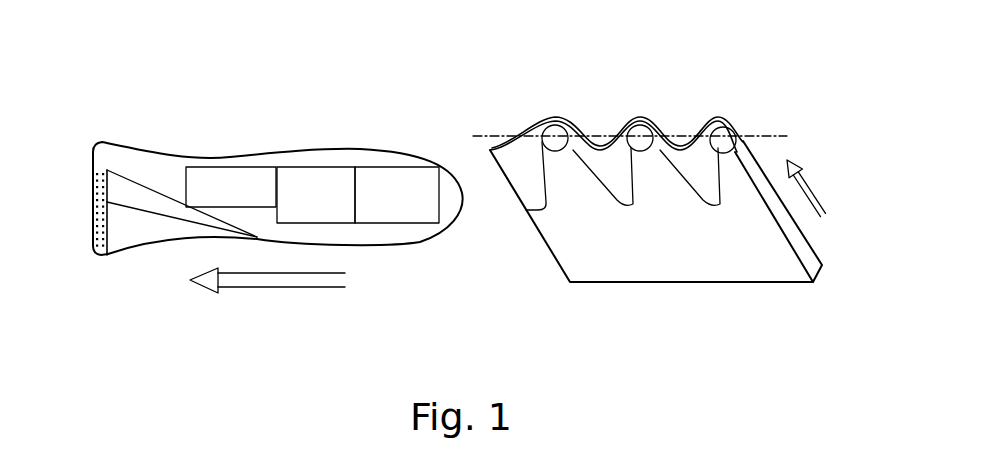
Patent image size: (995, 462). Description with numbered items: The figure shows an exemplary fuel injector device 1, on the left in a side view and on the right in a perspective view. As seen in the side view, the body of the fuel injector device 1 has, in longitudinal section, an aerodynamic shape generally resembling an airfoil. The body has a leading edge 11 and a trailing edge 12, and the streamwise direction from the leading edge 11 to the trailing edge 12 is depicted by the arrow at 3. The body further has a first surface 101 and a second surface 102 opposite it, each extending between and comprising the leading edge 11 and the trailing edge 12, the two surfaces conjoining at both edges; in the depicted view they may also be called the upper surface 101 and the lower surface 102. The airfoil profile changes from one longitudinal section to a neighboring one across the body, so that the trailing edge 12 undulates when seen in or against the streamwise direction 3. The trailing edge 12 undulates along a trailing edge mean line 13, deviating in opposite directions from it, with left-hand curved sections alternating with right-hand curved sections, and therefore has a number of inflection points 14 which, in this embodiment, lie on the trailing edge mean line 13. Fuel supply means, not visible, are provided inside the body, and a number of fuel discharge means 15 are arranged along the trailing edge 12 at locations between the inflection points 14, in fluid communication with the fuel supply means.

The fuel injector device 1 is at (350, 138).
The streamwise direction 3 is at (280, 287).
The leading edge 11 is at (468, 215).
The trailing edge 12 is at (83, 159).
The trailing edge mean line 13 is at (787, 137).
The inflection points 14 is at (92, 183).
The fuel discharge means 15 is at (90, 222).
The first surface 101 is at (213, 160).
The second surface 102 is at (134, 232).